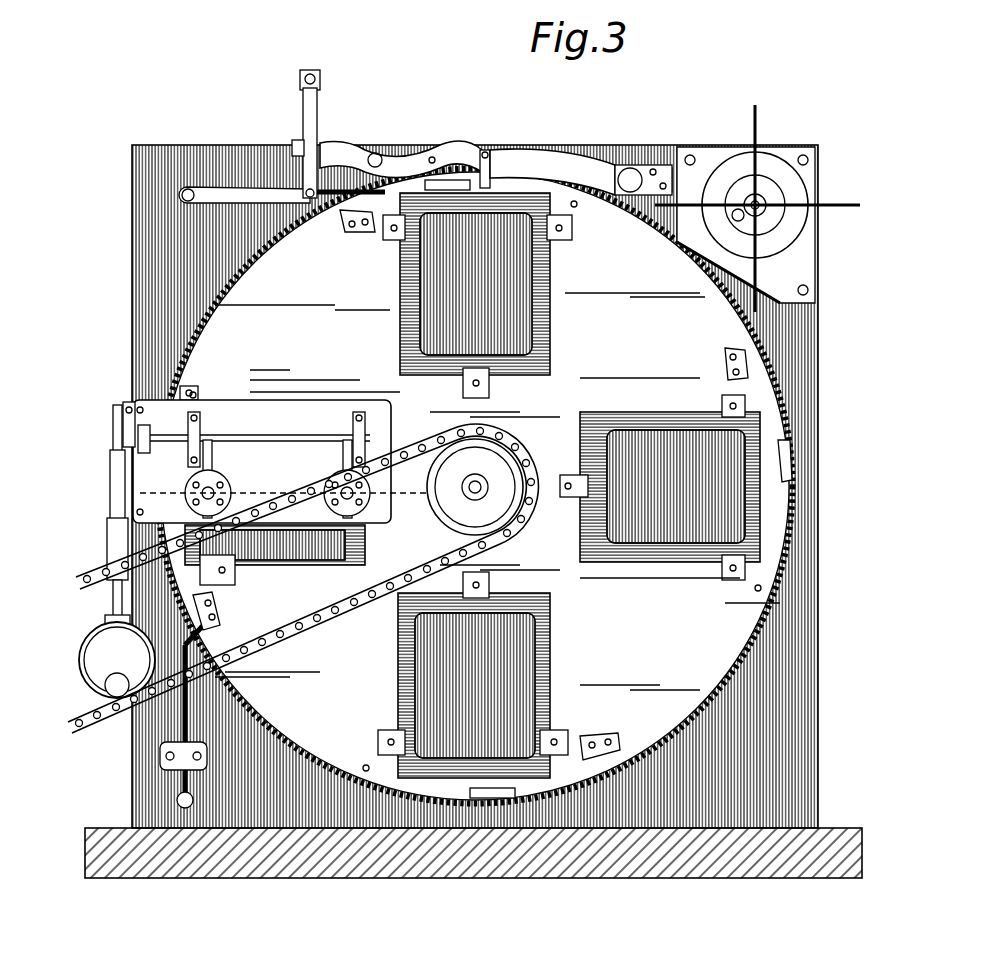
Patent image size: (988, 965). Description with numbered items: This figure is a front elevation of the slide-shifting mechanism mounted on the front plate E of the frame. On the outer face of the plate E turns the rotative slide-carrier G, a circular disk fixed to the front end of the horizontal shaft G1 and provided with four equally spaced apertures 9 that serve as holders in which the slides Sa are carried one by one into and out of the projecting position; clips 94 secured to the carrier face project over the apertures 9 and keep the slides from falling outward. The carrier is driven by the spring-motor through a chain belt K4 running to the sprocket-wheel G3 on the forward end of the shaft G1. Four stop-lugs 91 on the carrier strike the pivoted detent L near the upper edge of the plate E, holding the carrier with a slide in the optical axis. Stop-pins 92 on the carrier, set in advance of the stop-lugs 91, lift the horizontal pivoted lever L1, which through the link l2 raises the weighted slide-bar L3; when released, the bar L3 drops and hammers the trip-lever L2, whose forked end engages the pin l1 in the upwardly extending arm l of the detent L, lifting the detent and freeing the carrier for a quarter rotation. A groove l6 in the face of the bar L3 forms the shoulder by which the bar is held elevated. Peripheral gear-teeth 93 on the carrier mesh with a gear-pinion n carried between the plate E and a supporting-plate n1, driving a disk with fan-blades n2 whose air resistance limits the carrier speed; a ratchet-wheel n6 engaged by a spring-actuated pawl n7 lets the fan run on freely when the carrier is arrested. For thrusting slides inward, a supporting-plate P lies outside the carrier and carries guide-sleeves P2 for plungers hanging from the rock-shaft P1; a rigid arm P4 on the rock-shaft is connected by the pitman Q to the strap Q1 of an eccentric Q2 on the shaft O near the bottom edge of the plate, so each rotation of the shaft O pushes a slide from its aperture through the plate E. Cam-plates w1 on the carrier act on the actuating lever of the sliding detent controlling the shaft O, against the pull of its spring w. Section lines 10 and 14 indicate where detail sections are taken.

The front plate E is at (473, 511).
The slide-carrier G is at (475, 486).
The horizontal shaft G1 is at (482, 482).
The sprocket-wheel G3 is at (475, 487).
The chain belt K4 is at (345, 627).
The apertures 9 is at (548, 272).
The slides Sa is at (540, 655).
The stop-lugs 91 is at (452, 180).
The stop-pins 92 is at (577, 207).
The peripheral gear-teeth 93 is at (792, 475).
The clips 94 is at (390, 237).
The section line 10 is at (185, 484).
The section line 14 is at (344, 489).
The detent-lever L is at (555, 165).
The pivoted lever L1 is at (228, 190).
The trip-lever L2 is at (388, 152).
The weighted slide-bar L3 is at (322, 80).
The upwardly-extending arm l is at (512, 162).
The pin l1 is at (486, 148).
The link l2 is at (320, 142).
The groove l6 is at (432, 155).
The gear-pinion n is at (712, 225).
The supporting-plate n1 is at (760, 203).
The fan-blades n2 is at (688, 204).
The ratchet-wheel n6 is at (770, 198).
The spring-actuated pawl n7 is at (741, 221).
The supporting-plate P is at (92, 520).
The rock-shaft P1 is at (348, 430).
The guide-sleeves P2 is at (225, 485).
The rigid arm P4 is at (135, 405).
The pitman Q is at (112, 478).
The eccentric strap Q1 is at (104, 632).
The eccentric Q2 is at (117, 660).
The shaft O is at (117, 698).
The spring w is at (200, 690).
The cam-plates w1 is at (345, 225).